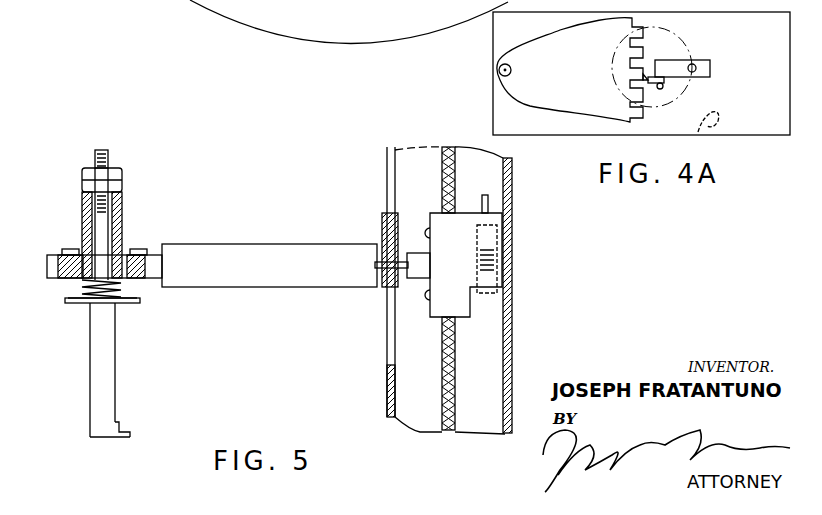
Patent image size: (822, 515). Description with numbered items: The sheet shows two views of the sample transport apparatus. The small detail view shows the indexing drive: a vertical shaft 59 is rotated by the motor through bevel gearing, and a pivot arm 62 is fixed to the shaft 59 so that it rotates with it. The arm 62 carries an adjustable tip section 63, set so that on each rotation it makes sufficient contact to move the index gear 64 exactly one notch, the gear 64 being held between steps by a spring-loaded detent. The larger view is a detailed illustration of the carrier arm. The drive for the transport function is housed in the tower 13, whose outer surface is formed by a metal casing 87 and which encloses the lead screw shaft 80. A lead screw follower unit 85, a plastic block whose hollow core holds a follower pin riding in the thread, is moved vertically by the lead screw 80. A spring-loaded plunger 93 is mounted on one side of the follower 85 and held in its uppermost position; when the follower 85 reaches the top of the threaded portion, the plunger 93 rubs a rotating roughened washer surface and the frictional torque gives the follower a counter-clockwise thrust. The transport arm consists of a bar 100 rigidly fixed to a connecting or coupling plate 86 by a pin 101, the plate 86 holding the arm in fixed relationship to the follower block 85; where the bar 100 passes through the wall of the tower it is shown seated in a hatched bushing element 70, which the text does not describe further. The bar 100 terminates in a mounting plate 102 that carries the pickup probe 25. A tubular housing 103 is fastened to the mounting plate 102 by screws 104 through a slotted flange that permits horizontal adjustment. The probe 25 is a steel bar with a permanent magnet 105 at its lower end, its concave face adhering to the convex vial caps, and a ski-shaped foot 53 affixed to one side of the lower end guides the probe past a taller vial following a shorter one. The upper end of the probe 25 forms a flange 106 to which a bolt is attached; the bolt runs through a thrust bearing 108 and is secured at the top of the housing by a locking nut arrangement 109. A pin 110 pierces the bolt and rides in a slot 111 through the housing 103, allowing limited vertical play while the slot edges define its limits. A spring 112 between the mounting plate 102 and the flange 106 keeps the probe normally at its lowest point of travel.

In FIG. 5, the tower 13 is at (397, 150).
In FIG. 5, the pickup probe 25 is at (110, 352).
In FIG. 5, the ski-shaped foot 53 is at (122, 425).
In FIG. 4A, the vertical shaft 59 is at (696, 66).
In FIG. 4A, the pivot arm 62 is at (657, 62).
In FIG. 4A, the adjustable tip section 63 is at (653, 84).
In FIG. 4A, the index gear 64 is at (562, 58).
In FIG. 5, the bushing 70 is at (382, 218).
In FIG. 5, the lead screw shaft 80 is at (447, 148).
In FIG. 5, the lead screw follower unit 85 is at (460, 292).
In FIG. 5, the connecting plate 86 is at (422, 238).
In FIG. 5, the metal casing 87 is at (514, 342).
In FIG. 5, the plunger 93 is at (485, 195).
In FIG. 5, the bar 100 is at (287, 277).
In FIG. 5, the pin 101 is at (375, 283).
In FIG. 5, the mounting plate 102 is at (47, 265).
In FIG. 5, the tubular housing 103 is at (123, 190).
In FIG. 5, the screws 104 is at (133, 253).
In FIG. 5, the permanent magnet 105 is at (100, 436).
In FIG. 5, the flange 106 is at (72, 303).
In FIG. 5, the thrust bearing 108 is at (80, 283).
In FIG. 5, the locking nut arrangement 109 is at (123, 172).
In FIG. 5, the pin 110 is at (120, 232).
In FIG. 5, the slot 111 is at (122, 210).
In FIG. 5, the spring 112 is at (125, 287).